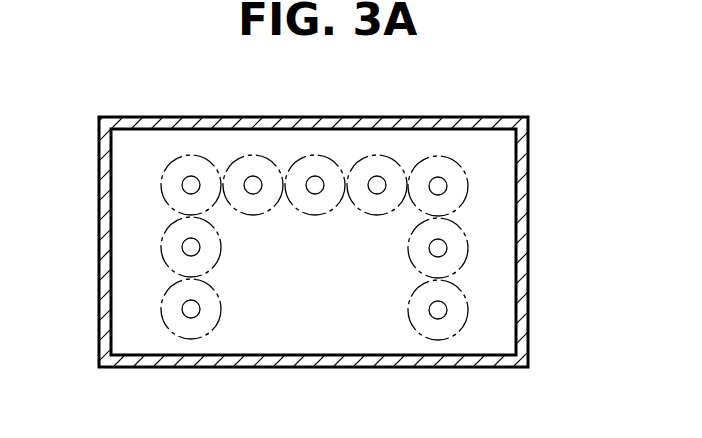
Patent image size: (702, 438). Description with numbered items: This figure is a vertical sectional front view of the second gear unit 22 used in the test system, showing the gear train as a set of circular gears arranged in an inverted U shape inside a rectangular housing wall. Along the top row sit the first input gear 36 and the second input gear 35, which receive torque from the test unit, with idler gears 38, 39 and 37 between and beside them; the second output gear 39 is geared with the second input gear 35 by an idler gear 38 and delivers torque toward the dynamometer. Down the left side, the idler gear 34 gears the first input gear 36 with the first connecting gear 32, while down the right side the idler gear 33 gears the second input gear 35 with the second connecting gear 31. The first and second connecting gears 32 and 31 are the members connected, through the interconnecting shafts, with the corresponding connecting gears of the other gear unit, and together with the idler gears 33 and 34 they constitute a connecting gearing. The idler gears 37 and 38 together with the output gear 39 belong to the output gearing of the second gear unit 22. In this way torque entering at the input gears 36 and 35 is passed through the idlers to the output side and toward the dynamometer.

The second gear unit 22 is at (528, 147).
The second connecting gear 31 is at (463, 318).
The first connecting gear 32 is at (161, 312).
The idler gear 33 is at (463, 238).
The idler gear 34 is at (162, 232).
The second input gear 35 is at (439, 156).
The first input gear 36 is at (190, 155).
The idler gear 37 is at (380, 155).
The idler gear 38 is at (255, 155).
The second output gear 39 is at (316, 155).